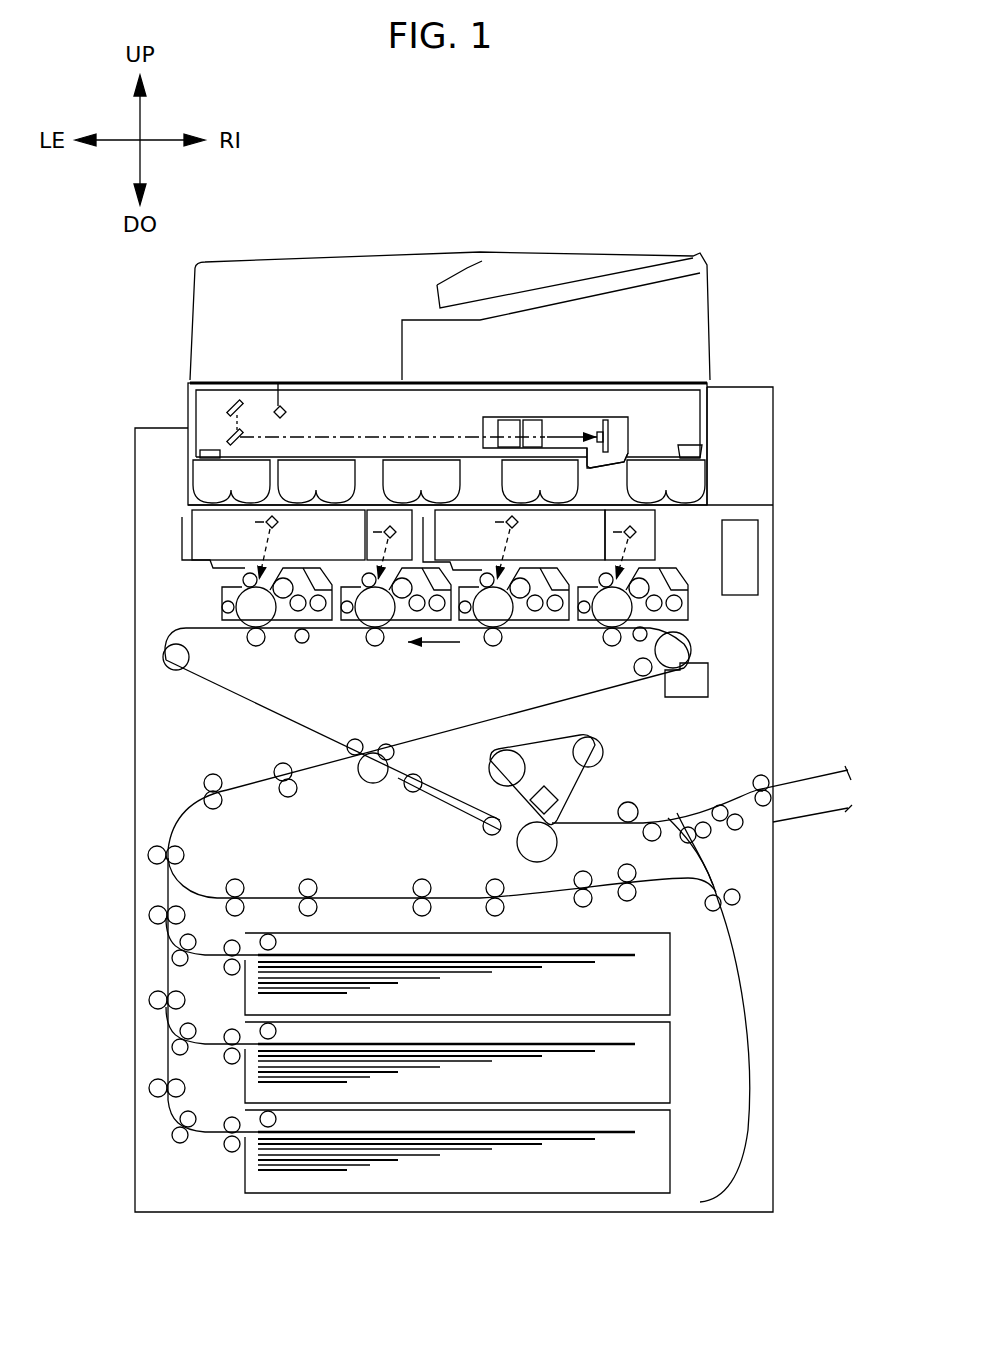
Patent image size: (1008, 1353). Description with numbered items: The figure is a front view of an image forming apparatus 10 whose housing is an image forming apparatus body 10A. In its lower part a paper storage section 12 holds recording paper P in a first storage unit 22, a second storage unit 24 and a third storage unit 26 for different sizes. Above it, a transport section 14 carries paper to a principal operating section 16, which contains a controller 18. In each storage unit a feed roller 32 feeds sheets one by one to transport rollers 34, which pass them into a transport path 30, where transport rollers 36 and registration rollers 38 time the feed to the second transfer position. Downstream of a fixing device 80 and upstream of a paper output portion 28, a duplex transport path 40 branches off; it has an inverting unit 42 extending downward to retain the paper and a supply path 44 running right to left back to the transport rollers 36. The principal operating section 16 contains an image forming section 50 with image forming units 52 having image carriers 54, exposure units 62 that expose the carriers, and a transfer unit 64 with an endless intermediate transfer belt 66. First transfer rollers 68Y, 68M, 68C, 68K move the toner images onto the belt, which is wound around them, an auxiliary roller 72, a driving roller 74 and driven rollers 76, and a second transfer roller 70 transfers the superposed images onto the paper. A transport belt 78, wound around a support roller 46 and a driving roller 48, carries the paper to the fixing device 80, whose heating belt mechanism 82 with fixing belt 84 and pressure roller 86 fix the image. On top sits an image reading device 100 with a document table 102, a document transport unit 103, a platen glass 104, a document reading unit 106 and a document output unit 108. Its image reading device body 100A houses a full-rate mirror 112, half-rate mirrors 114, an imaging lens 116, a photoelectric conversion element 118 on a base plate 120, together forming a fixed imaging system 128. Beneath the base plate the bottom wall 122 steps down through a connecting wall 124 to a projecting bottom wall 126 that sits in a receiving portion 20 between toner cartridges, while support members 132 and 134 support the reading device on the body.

The image forming apparatus 10 is at (754, 147).
The image forming apparatus body 10A is at (775, 588).
The paper storage section 12 is at (682, 1183).
The transport section 14 is at (158, 830).
The principal operating section 16 is at (176, 577).
The controller 18 is at (750, 545).
The receiving portion 20 is at (594, 477).
The first storage unit 22 is at (672, 1137).
The second storage unit 24 is at (672, 1055).
The third storage unit 26 is at (672, 972).
The paper output portion 28 is at (812, 790).
The transport path 30 is at (178, 810).
The feed roller 32 is at (266, 950).
The transport rollers 34 is at (226, 968).
The transport rollers 36 is at (216, 782).
The registration rollers 38 is at (292, 794).
The duplex transport path 40 is at (756, 968).
The inverting unit 42 is at (752, 1050).
The supply path 44 is at (348, 896).
The support roller 46 is at (411, 792).
The driving roller 48 is at (489, 826).
The image forming section 50 is at (213, 606).
The image forming units 52 is at (690, 605).
The image carriers 54 is at (500, 619).
The exposure units 62 is at (657, 529).
The transfer unit 64 is at (226, 700).
The intermediate transfer belt 66 is at (454, 740).
The first transfer roller (black) 68K is at (256, 647).
The first transfer roller (cyan) 68C is at (375, 647).
The first transfer roller (magenta) 68M is at (493, 647).
The first transfer roller (yellow) 68Y is at (612, 647).
The second transfer roller 70 is at (371, 774).
The auxiliary roller 72 is at (389, 745).
The driving roller 74 is at (681, 652).
The driven rollers 76 is at (302, 644).
The transport belt 78 is at (447, 807).
The fixing device 80 is at (625, 748).
The heating belt mechanism 82 is at (545, 742).
The fixing belt 84 is at (585, 789).
The pressure roller 86 is at (551, 838).
The image reading device 100 is at (333, 247).
The image reading device body 100A is at (708, 407).
The document table 102 is at (598, 290).
The document transport unit 103 is at (420, 270).
The platen glass 104 is at (304, 380).
The document reading unit 106 is at (714, 424).
The document output unit 108 is at (549, 348).
The full-rate mirror 112 is at (288, 412).
The half-rate mirrors 114 is at (231, 407).
The imaging lens 116 is at (511, 424).
The photoelectric conversion element 118 is at (603, 427).
The base plate 120 is at (625, 425).
The bottom wall 122 is at (230, 462).
The connecting wall 124 is at (627, 463).
The projecting bottom wall 126 is at (612, 471).
The imaging system 128 is at (637, 425).
The support members 132 is at (204, 453).
The support members 134 is at (694, 450).
The recording paper P is at (612, 958).